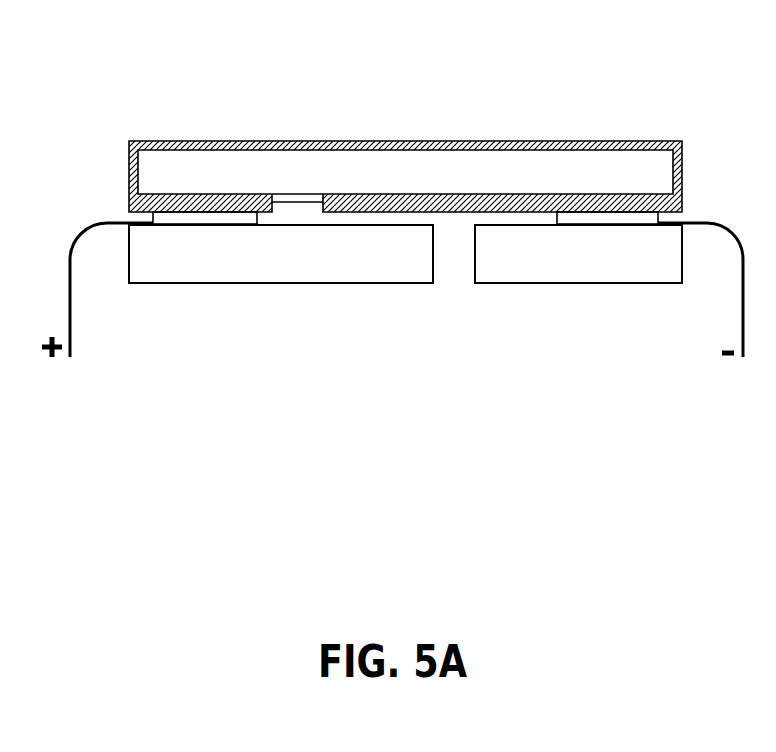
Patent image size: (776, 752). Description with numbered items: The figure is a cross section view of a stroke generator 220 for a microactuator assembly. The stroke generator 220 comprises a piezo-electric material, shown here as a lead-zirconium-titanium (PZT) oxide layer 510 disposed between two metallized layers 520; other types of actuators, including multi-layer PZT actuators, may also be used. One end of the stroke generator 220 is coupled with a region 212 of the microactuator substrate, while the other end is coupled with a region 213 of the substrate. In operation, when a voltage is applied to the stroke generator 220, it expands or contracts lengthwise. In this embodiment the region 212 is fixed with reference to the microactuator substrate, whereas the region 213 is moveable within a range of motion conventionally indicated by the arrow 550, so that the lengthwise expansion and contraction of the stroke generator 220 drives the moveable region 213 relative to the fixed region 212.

The stroke generator 220 is at (93, 59).
The lead-zirconium-titanium (PZT) oxide layer 510 is at (405, 123).
The metallized layers 520 is at (637, 195).
The arrow 550 is at (471, 115).
The region 212 is at (313, 267).
The region 213 is at (630, 255).